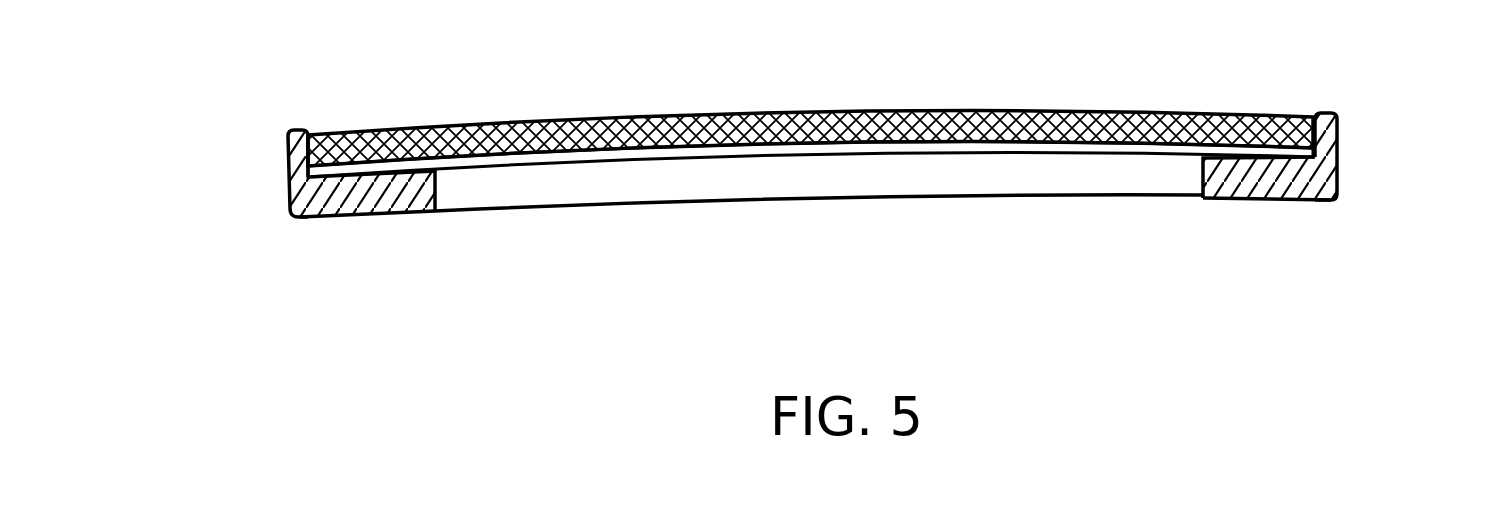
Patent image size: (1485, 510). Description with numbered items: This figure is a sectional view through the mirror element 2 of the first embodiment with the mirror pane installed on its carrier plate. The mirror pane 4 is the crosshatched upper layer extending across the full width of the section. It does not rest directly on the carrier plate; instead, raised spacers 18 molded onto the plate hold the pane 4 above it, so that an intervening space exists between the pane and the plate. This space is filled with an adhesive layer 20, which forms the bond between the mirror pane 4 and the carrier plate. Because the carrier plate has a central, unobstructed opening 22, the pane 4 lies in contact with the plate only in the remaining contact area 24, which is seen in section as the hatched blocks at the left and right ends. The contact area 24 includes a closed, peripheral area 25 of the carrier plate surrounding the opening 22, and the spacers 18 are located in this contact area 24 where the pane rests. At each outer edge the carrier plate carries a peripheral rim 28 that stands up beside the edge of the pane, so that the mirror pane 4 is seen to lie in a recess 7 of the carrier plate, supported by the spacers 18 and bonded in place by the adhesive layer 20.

The mirror element 2 is at (812, 179).
The mirror pane 4 is at (610, 117).
The recess 7 is at (312, 152).
The spacers 18 is at (367, 160).
The adhesive layer 20 is at (812, 234).
The opening 22 is at (617, 190).
The contact area 24 is at (310, 219).
The peripheral area 25 is at (395, 208).
The peripheral rim 28 is at (289, 166).